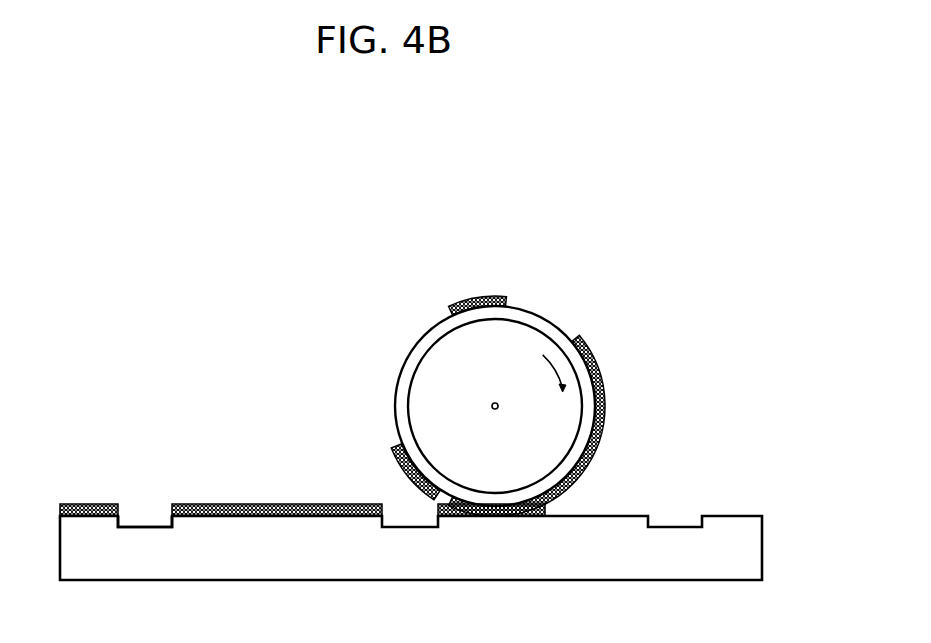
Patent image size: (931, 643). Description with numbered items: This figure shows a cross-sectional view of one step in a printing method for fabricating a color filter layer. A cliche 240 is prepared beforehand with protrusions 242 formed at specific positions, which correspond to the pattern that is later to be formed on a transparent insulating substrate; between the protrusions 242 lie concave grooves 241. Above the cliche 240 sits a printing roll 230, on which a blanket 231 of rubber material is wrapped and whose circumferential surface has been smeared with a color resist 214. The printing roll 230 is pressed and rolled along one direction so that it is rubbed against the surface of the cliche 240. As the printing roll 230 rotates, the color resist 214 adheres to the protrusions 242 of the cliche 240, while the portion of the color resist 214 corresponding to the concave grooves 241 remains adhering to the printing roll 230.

The color resist 214 is at (589, 344).
The printing roll 230 is at (534, 340).
The blanket 231 is at (436, 333).
The cliche 240 is at (755, 549).
The concave grooves 241 is at (144, 521).
The protrusions 242 is at (258, 507).